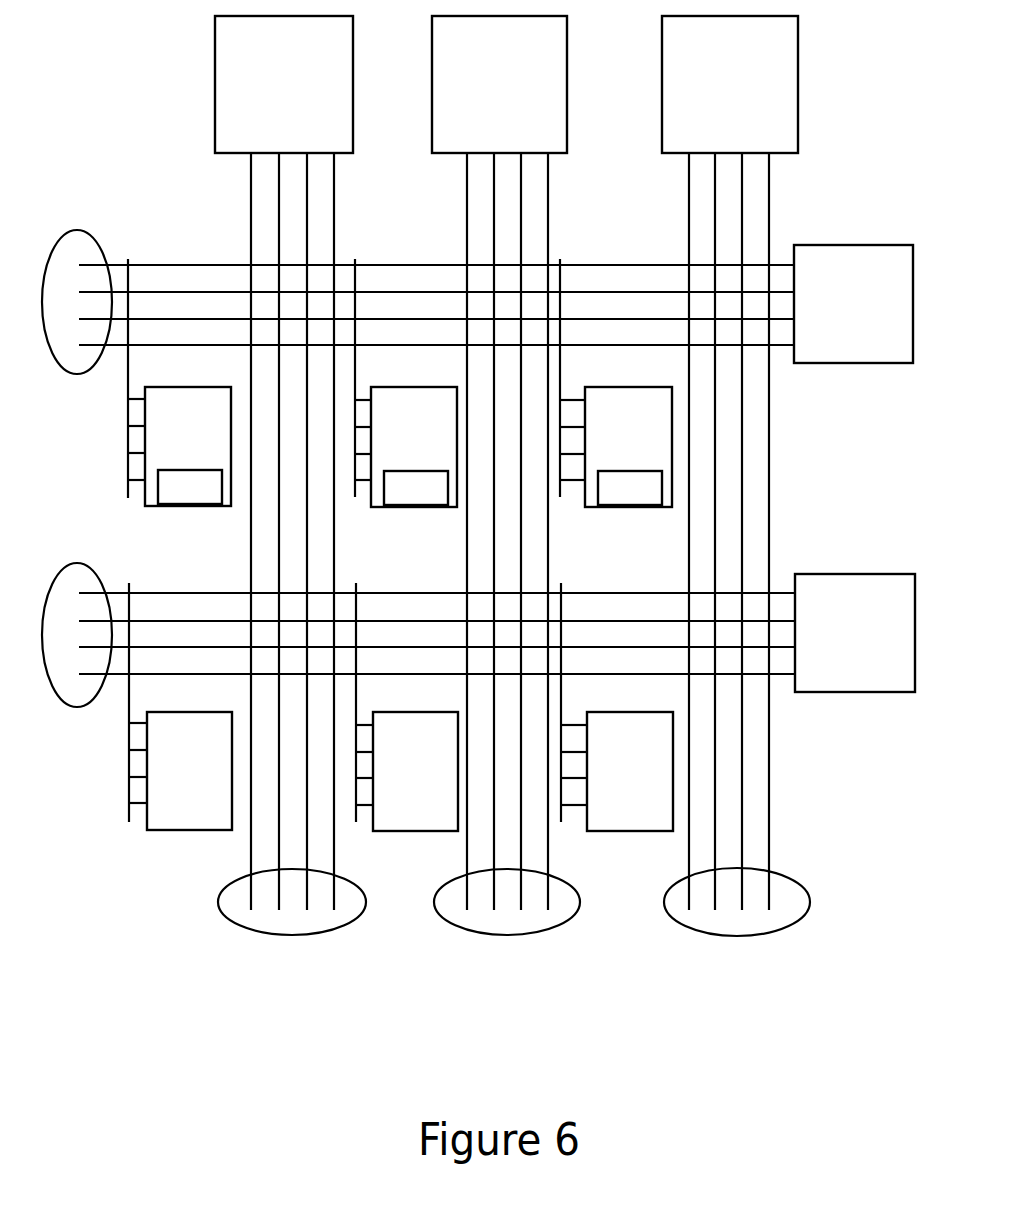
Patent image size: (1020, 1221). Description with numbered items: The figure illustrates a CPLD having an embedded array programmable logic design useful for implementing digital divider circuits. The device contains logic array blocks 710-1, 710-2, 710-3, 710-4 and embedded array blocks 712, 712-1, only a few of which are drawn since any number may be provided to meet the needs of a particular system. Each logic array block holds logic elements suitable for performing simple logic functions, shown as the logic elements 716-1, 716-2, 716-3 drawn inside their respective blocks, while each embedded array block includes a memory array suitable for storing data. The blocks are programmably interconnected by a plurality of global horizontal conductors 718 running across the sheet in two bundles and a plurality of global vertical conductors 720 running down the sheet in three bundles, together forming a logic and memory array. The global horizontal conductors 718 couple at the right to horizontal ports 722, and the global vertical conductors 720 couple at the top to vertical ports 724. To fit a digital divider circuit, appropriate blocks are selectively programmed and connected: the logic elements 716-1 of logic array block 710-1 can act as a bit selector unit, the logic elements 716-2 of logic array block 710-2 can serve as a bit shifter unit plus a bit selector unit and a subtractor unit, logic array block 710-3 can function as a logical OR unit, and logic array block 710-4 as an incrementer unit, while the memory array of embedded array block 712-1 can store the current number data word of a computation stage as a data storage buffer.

The logic array block 710-1 is at (188, 446).
The logic array block 710-2 is at (414, 447).
The logic array block 710-3 is at (415, 771).
The logic array block 710-4 is at (189, 771).
The embedded array block 712 is at (630, 771).
The embedded array block 712-1 is at (628, 447).
The logic elements 716-1 is at (190, 487).
The logic elements 716-2 is at (416, 488).
The logic elements 716-3 is at (630, 488).
The global horizontal conductors 718 is at (75, 230).
The global vertical conductors 720 is at (730, 938).
The horizontal ports 722 is at (854, 468).
The vertical ports 724 is at (506, 84).